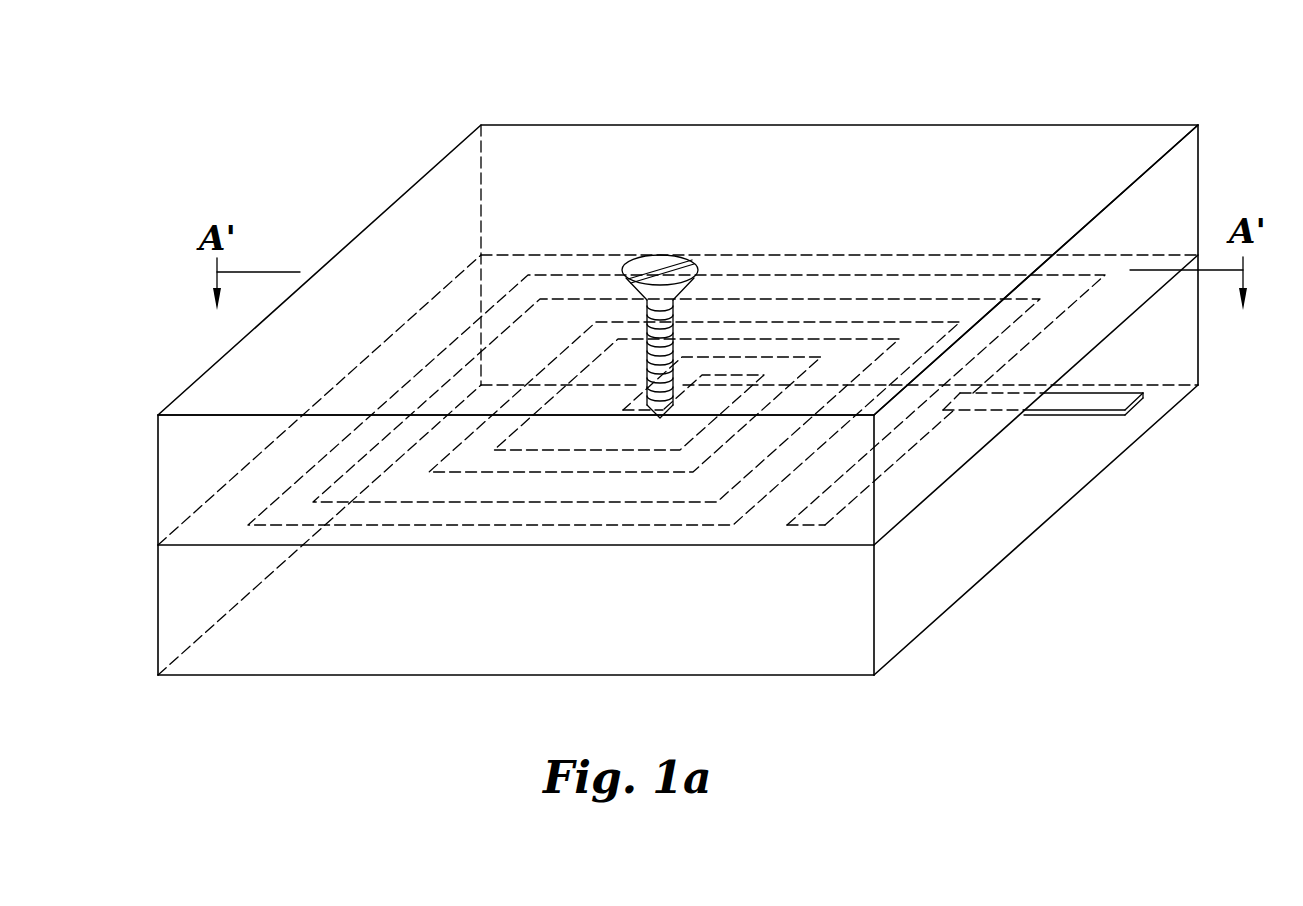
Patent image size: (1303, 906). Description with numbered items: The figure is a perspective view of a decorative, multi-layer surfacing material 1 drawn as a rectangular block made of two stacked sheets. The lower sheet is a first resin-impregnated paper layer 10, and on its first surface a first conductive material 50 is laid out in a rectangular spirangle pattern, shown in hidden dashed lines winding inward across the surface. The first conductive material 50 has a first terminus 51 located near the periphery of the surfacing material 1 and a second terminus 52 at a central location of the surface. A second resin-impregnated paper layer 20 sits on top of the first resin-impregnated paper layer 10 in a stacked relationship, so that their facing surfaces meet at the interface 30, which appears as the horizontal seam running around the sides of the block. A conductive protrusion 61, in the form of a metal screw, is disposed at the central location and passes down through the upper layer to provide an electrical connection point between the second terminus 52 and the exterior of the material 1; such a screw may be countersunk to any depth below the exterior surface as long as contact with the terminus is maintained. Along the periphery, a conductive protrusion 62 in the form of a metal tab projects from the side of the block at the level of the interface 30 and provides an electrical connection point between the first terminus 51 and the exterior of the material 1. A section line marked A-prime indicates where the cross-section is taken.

The multi-layer surfacing material 1 is at (447, 97).
The first resin-impregnated paper layer 10 is at (158, 600).
The second resin-impregnated paper layer 20 is at (158, 477).
The interface 30 is at (921, 504).
The first conductive material 50 is at (905, 355).
The first terminus 51 is at (807, 527).
The second terminus 52 is at (640, 403).
The conductive protrusion 61 is at (680, 272).
The conductive protrusion 62 is at (1078, 413).